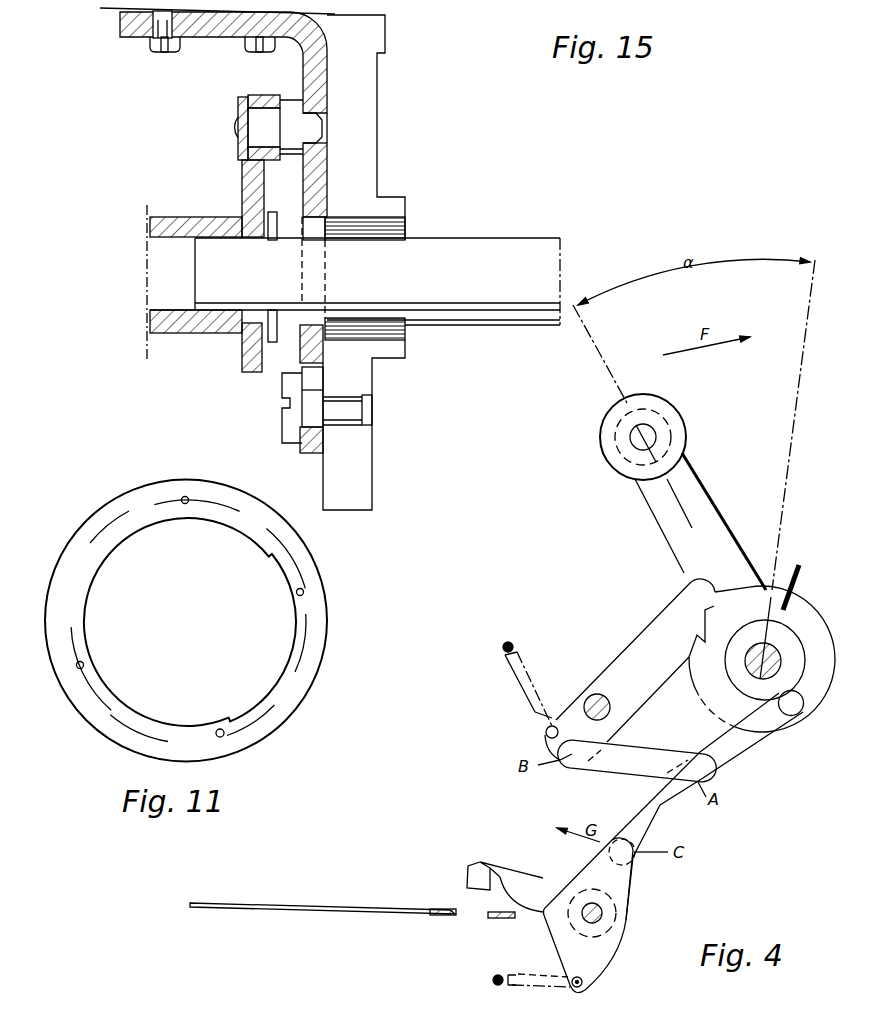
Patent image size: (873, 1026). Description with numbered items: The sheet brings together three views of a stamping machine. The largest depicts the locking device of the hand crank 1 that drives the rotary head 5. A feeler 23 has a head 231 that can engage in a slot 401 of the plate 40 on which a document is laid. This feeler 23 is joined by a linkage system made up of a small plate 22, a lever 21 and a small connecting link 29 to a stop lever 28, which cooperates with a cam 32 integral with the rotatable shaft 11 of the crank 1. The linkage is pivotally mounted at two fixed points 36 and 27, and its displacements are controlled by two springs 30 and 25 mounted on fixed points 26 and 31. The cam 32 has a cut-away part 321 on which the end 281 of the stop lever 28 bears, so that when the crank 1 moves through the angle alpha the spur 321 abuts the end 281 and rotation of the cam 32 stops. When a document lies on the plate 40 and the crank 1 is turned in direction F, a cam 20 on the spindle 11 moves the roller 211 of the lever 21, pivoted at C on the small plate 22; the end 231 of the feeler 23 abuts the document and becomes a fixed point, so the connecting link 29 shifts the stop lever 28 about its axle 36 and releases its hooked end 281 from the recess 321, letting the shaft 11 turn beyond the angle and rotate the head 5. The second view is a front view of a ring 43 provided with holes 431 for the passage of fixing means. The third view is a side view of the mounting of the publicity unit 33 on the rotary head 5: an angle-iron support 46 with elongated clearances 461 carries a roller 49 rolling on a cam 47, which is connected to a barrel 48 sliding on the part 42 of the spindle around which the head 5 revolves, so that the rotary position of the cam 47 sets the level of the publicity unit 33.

In FIG. 15, the publicity unit 33 is at (150, 30).
In FIG. 15, the rotary head 5 is at (366, 124).
In FIG. 15, the support 46 is at (316, 185).
In FIG. 15, the elongated clearance 461 is at (311, 230).
In FIG. 15, the roller 49 is at (238, 140).
In FIG. 15, the barrel 48 is at (191, 326).
In FIG. 15, the cam 47 is at (240, 362).
In FIG. 15, the part of the spindle 42 is at (447, 252).
In FIG. 11, the ring 43 is at (67, 562).
In FIG. 11, the holes 431 is at (188, 498).
In FIG. 4, the hand crank 1 is at (689, 487).
In FIG. 4, the rotatable shaft 11 is at (777, 647).
In FIG. 4, the cam 20 is at (793, 655).
In FIG. 4, the cam 32 is at (790, 615).
In FIG. 4, the cut-away part 321 is at (694, 641).
In FIG. 4, the stop lever 28 is at (623, 652).
In FIG. 4, the end of the stop lever 281 is at (708, 589).
In FIG. 4, the fixed point 36 is at (592, 692).
In FIG. 4, the spring 30 is at (515, 677).
In FIG. 4, the fixed point 31 is at (513, 647).
In FIG. 4, the connecting link 29 is at (632, 757).
In FIG. 4, the lever 21 is at (730, 757).
In FIG. 4, the roller 211 is at (795, 711).
In FIG. 4, the small plate 22 is at (622, 892).
In FIG. 4, the fixed point 27 is at (603, 917).
In FIG. 4, the feeler 23 is at (515, 882).
In FIG. 4, the head of the feeler 231 is at (473, 878).
In FIG. 4, the plate 40 is at (345, 906).
In FIG. 4, the slot 401 is at (470, 915).
In FIG. 4, the fixed point 26 is at (495, 980).
In FIG. 4, the spring 25 is at (533, 982).